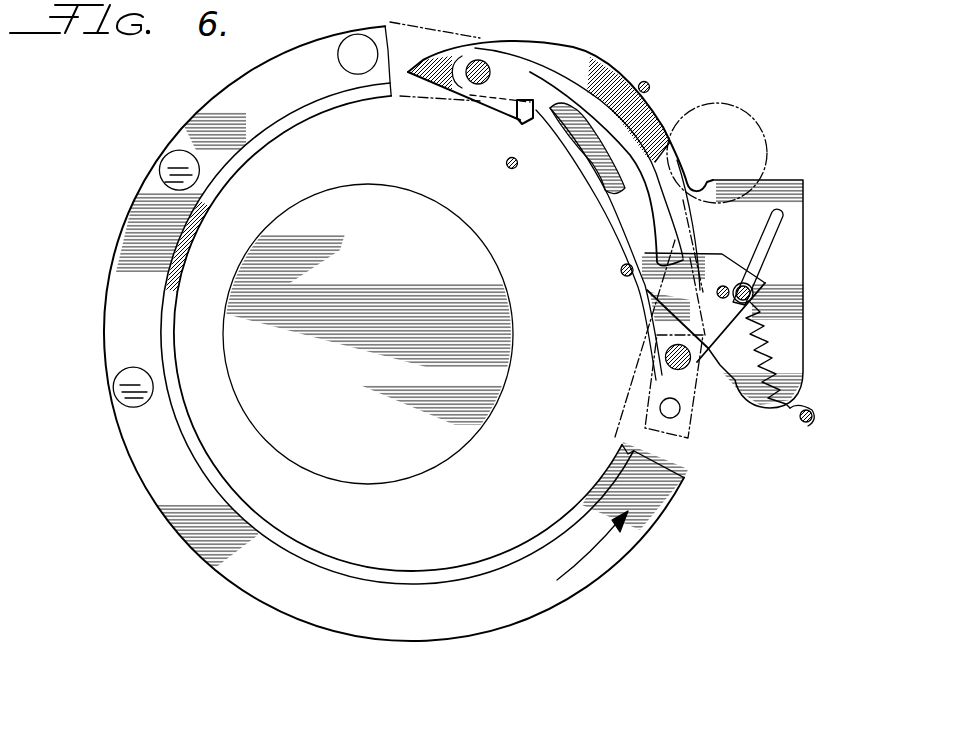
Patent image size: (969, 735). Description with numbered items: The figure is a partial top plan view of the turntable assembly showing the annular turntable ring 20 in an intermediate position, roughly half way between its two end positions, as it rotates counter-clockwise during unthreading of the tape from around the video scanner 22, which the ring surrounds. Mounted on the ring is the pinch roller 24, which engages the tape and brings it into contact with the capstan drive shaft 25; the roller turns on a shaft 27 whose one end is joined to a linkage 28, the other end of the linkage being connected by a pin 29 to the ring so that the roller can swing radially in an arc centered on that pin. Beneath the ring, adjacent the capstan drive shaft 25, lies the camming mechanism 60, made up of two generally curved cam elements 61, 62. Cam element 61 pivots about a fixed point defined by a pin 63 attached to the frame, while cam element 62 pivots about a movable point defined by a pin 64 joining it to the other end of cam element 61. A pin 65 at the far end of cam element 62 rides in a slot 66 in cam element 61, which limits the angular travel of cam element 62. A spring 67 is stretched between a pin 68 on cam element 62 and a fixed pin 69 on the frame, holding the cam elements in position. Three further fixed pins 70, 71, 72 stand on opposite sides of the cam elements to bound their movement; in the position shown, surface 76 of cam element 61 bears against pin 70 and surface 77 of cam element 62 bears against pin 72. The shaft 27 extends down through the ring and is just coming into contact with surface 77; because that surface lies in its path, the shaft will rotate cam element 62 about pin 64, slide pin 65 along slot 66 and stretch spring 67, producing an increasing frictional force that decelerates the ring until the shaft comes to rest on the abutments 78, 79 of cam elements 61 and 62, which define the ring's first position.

The turntable ring 20 is at (228, 107).
The video scanner 22 is at (357, 276).
The pinch roller 24 is at (647, 333).
The capstan drive shaft 25 is at (770, 112).
The shaft 27 is at (664, 360).
The linkage 28 is at (650, 393).
The pin 29 is at (681, 412).
The camming mechanism 60 is at (648, 60).
The cam element 61 is at (575, 60).
The cam element 62 is at (640, 190).
The pin 63 is at (796, 370).
The pin 64 is at (478, 60).
The pin 65 is at (723, 285).
The slot 66 is at (778, 215).
The spring 67 is at (770, 323).
The pin 68 is at (752, 288).
The fixed pin 69 is at (815, 418).
The pin 70 is at (651, 87).
The pin 71 is at (506, 166).
The pin 72 is at (620, 269).
The surface 76 is at (555, 42).
The surface 77 is at (592, 160).
The abutment 78 is at (500, 105).
The abutment 79 is at (518, 124).